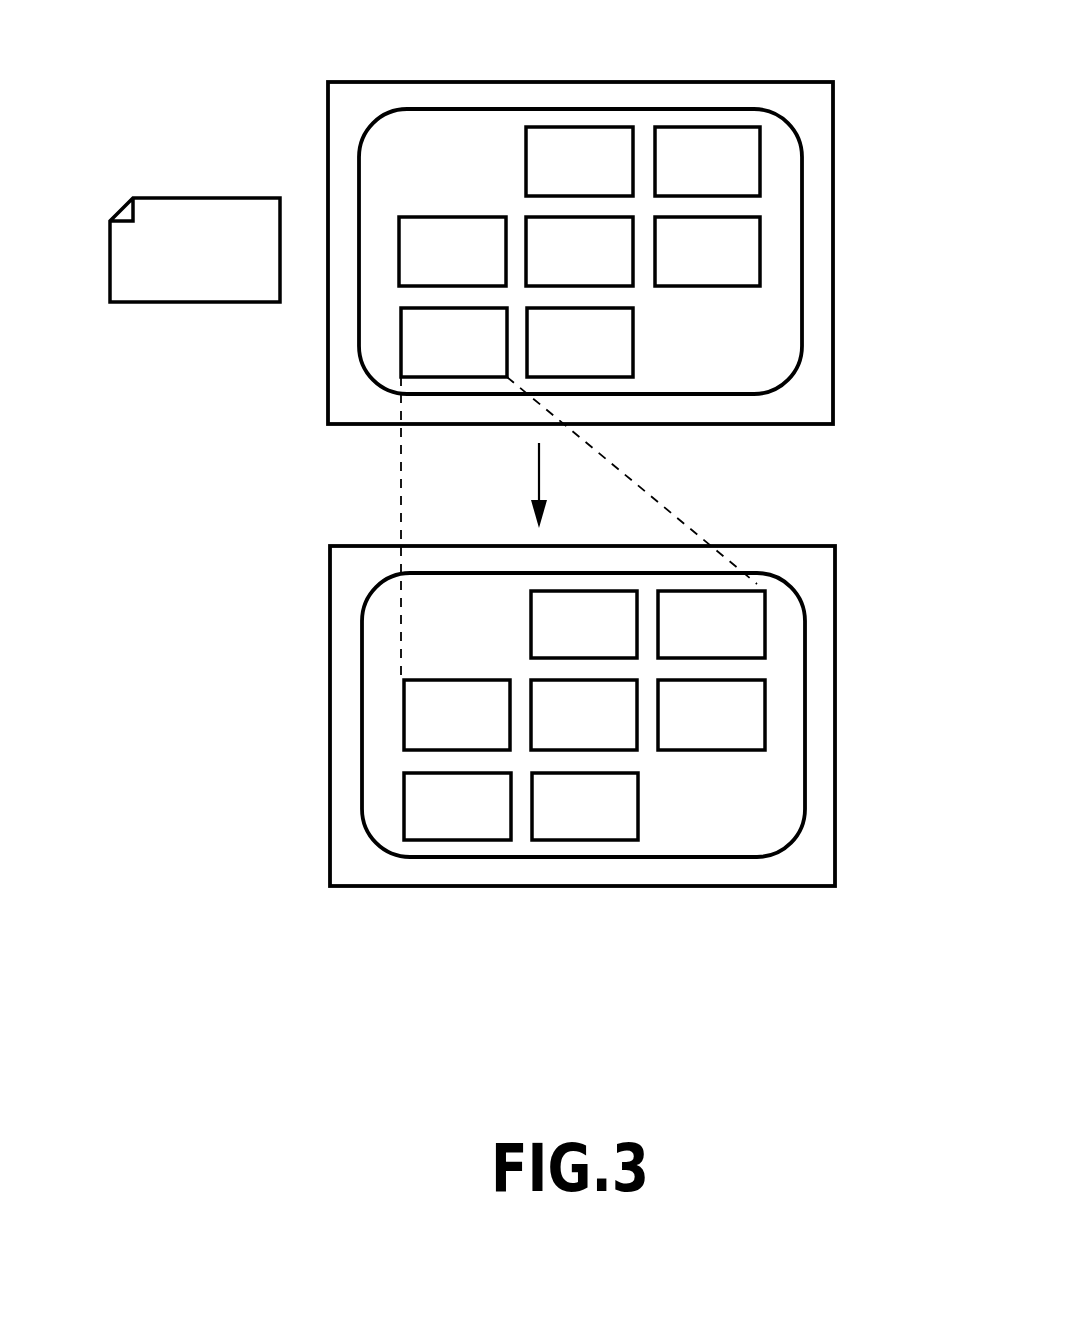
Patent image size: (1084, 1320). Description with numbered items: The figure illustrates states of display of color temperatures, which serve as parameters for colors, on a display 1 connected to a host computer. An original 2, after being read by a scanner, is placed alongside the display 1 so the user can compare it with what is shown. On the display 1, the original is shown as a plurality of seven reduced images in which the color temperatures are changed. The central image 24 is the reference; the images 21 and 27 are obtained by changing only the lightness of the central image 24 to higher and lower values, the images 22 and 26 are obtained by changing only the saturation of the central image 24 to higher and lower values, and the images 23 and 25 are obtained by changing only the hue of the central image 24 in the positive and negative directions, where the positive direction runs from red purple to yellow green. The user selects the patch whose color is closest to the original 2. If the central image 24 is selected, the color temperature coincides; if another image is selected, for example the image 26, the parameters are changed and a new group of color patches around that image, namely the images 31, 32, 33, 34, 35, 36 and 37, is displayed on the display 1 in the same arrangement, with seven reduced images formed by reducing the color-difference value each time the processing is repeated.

The display 1 is at (817, 178).
The original 2 is at (200, 235).
The image 21 is at (578, 147).
The image 22 is at (712, 146).
The image 23 is at (440, 243).
The central image 24 is at (605, 265).
The image 25 is at (735, 250).
The image 26 is at (415, 347).
The image 27 is at (612, 355).
The image 31 is at (585, 612).
The image 32 is at (742, 626).
The image 33 is at (444, 708).
The image 34 is at (610, 728).
The image 35 is at (738, 714).
The image 36 is at (460, 828).
The image 37 is at (597, 828).